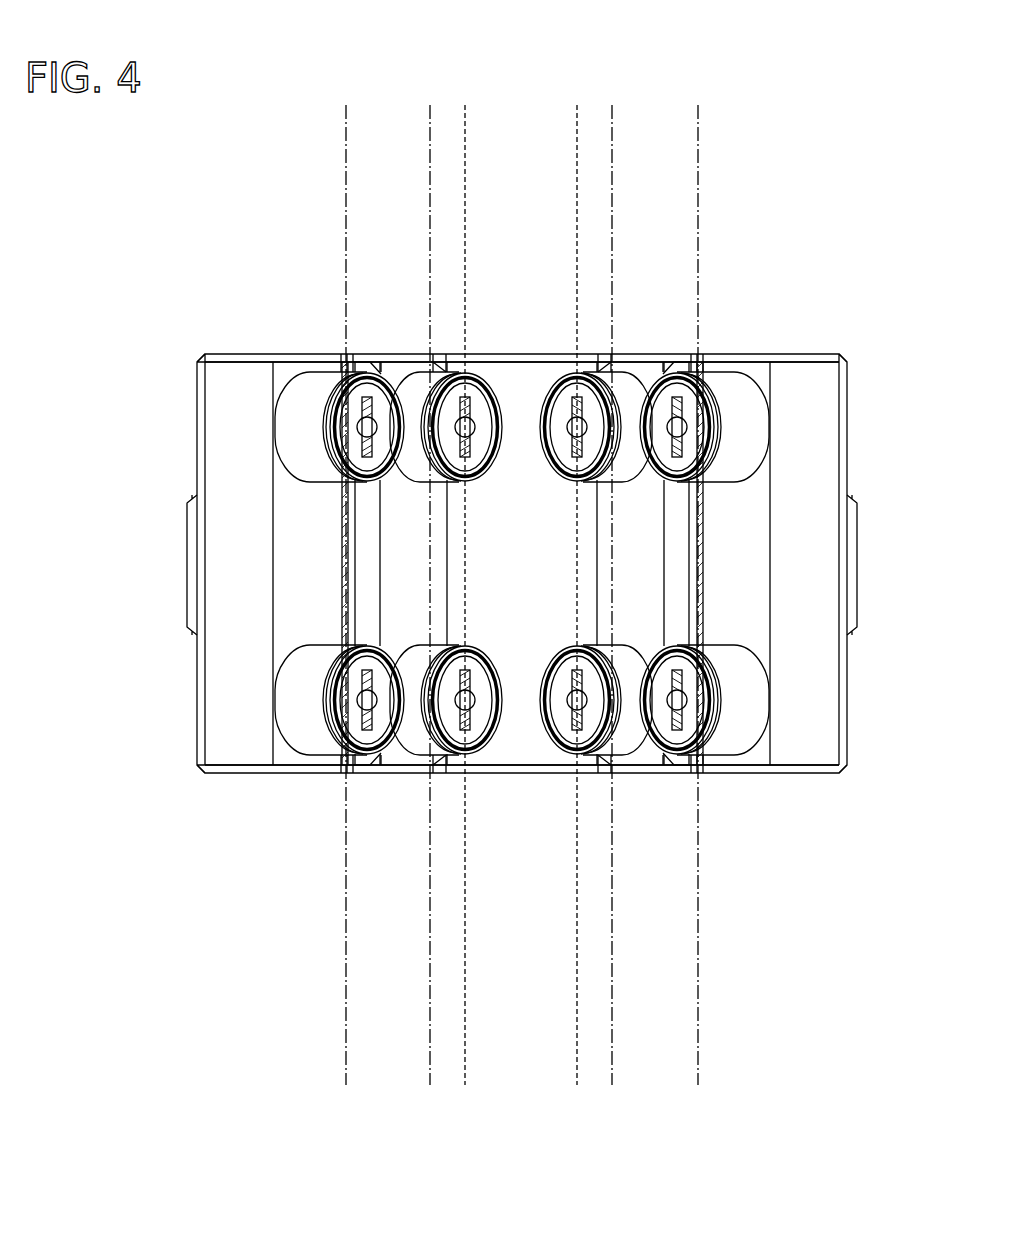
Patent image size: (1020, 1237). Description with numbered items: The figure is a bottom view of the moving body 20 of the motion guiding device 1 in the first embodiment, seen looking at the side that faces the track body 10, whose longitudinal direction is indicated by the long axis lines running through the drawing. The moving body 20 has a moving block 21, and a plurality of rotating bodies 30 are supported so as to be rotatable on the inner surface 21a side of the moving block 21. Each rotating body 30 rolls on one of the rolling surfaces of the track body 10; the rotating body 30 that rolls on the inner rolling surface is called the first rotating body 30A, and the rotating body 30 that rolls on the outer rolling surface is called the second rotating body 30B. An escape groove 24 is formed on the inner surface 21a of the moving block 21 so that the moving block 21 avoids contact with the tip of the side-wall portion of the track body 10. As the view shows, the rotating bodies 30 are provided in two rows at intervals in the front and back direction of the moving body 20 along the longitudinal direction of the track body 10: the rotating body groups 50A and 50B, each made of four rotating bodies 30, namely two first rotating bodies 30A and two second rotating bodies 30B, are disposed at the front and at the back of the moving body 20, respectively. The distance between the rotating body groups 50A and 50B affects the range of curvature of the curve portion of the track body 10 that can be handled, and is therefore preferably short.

The motion guiding device 1 is at (143, 268).
The track body 10 is at (344, 205).
The moving body 20 is at (190, 386).
The moving block 21 is at (197, 462).
The inner surface 21a is at (521, 368).
The escape groove 24 is at (345, 559).
The rotating body 30 is at (522, 565).
The first rotating body 30A is at (421, 354).
The second rotating body 30B is at (331, 354).
The rotating body group 50A is at (792, 418).
The rotating body group 50B is at (792, 695).